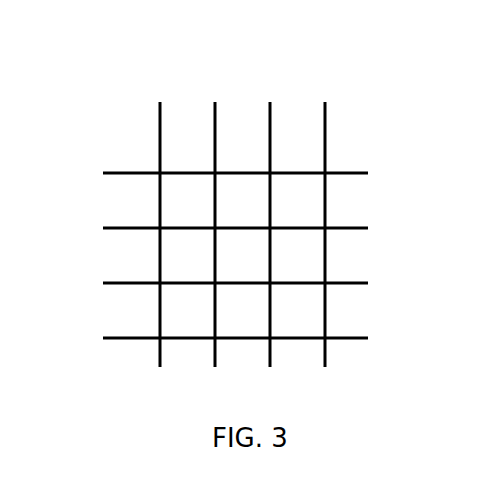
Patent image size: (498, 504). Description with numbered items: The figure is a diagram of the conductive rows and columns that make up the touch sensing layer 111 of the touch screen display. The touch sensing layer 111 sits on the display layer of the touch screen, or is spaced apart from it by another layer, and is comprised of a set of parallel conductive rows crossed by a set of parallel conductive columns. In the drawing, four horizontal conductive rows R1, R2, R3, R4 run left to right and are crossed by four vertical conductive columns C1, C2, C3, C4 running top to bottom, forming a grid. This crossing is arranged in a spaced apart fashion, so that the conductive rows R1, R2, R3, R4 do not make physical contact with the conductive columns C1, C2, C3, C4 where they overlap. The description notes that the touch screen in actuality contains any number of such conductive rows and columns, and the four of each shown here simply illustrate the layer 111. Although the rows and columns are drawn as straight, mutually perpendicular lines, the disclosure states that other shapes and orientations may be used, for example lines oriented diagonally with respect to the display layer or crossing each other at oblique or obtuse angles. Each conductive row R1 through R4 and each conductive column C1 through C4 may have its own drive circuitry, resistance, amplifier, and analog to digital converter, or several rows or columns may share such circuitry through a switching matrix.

The touch sensing layer 111 is at (88, 81).
The conductive column C1 is at (161, 223).
The conductive column C2 is at (216, 223).
The conductive column C3 is at (271, 223).
The conductive column C4 is at (337, 222).
The conductive row R1 is at (223, 174).
The conductive row R2 is at (223, 229).
The conductive row R3 is at (223, 284).
The conductive row R4 is at (223, 339).